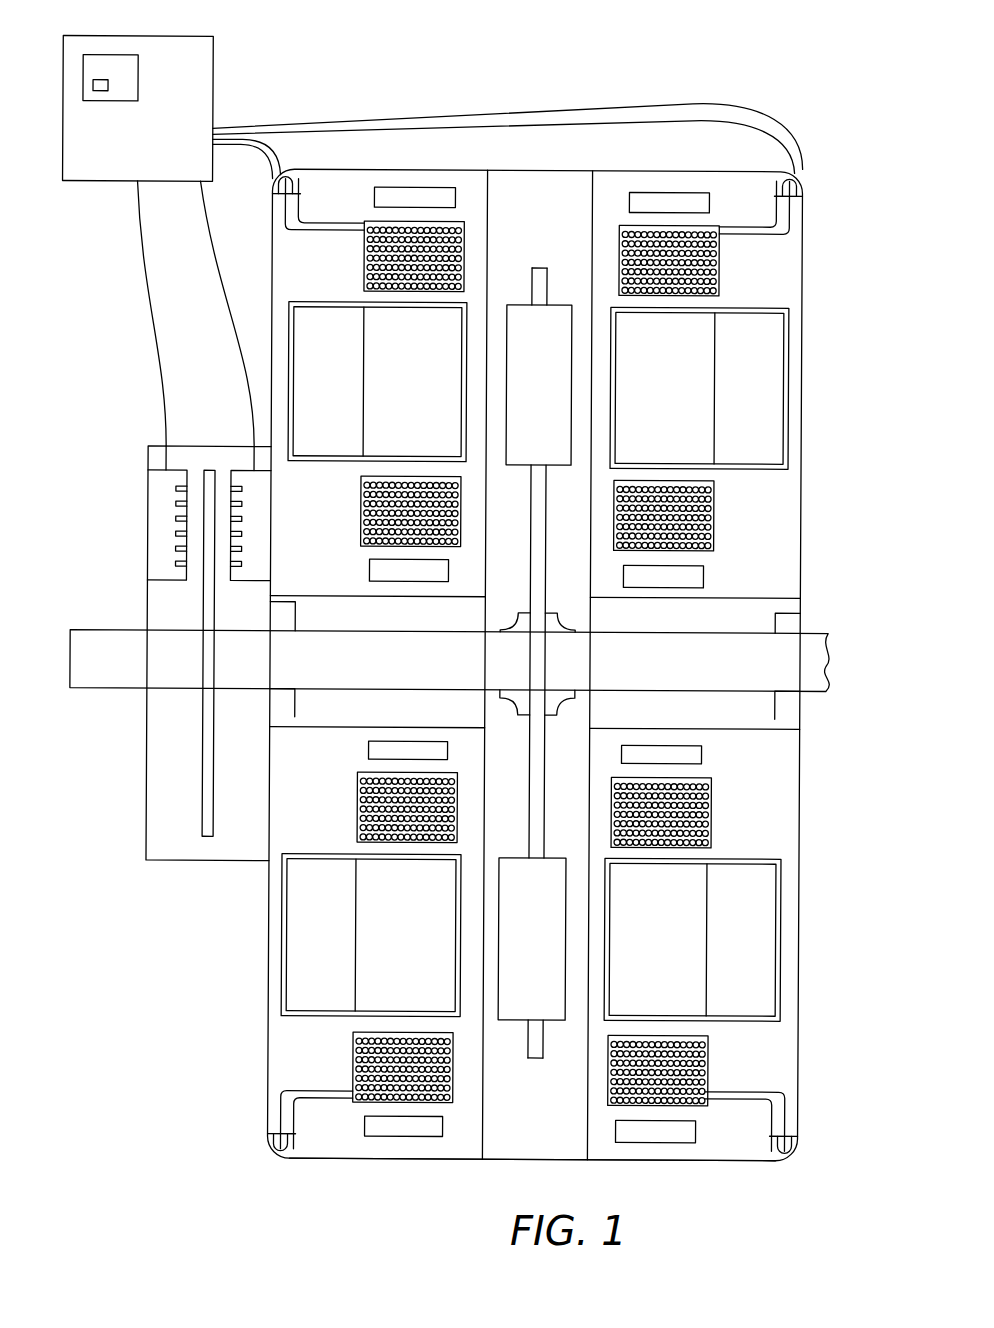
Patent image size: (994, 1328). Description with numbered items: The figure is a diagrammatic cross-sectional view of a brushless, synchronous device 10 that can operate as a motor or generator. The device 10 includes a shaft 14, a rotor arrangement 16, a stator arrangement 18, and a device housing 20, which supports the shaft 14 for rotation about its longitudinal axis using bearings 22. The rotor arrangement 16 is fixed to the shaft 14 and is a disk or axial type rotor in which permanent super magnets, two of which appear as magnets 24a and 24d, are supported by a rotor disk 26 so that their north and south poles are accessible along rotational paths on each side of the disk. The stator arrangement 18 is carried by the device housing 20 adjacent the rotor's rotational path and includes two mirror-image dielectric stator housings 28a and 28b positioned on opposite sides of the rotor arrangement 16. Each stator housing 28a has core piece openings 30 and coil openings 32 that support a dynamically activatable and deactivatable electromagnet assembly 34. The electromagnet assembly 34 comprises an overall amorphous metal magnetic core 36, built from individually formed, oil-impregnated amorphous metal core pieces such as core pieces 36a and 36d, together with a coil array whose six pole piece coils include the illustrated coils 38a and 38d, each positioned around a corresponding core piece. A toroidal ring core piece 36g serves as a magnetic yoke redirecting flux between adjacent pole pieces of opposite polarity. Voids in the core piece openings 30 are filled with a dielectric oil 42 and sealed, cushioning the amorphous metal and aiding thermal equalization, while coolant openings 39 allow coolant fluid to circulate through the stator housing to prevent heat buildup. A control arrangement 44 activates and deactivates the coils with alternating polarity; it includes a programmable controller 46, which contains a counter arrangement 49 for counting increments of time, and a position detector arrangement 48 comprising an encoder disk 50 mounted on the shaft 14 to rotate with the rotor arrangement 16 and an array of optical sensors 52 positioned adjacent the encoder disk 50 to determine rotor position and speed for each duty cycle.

The device 10 is at (170, 1028).
The shaft 14 is at (676, 679).
The rotor arrangement 16 is at (530, 1085).
The stator arrangement 18 is at (403, 1162).
The device housing 20 is at (265, 1095).
The bearings 22 is at (292, 618).
The permanent super magnet 24a is at (562, 377).
The permanent super magnet 24d is at (560, 951).
The rotor disk 26 is at (535, 782).
The stator housing 28a is at (305, 268).
The stator housing 28b is at (748, 522).
The core piece openings 30 is at (284, 932).
The coil openings 32 is at (712, 800).
The electromagnet assembly 34 is at (325, 1030).
The overall amorphous metal magnetic core 36 is at (745, 300).
The amorphous metal core piece 36a is at (435, 397).
The amorphous metal core piece 36d is at (425, 949).
The toroidal ring core piece 36g is at (325, 345).
The coil 38a is at (362, 512).
The coil 38d is at (360, 800).
The coolant openings 39 is at (418, 582).
The dielectric oil 42 is at (283, 970).
The control arrangement 44 is at (214, 72).
The controller 46 is at (120, 68).
The position detector arrangement 48 is at (165, 521).
The counter arrangement 49 is at (97, 95).
The encoder disk 50 is at (205, 770).
The optical sensors 52 is at (165, 510).